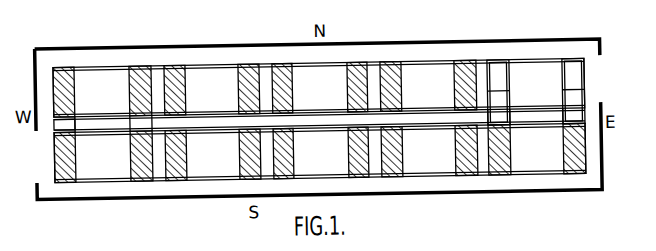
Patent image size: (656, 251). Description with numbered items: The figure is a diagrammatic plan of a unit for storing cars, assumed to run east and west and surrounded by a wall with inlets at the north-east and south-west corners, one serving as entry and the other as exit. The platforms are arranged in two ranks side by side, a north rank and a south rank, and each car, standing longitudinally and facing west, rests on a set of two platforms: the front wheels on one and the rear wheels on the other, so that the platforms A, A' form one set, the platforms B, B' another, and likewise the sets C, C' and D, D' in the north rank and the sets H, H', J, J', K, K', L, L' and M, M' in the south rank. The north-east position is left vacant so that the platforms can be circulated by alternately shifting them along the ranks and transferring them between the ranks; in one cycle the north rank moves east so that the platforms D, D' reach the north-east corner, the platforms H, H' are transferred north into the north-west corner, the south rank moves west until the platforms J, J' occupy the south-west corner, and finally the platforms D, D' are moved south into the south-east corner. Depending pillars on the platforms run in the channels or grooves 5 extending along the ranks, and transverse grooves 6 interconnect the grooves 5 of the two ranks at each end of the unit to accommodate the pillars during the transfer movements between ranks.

The channels or grooves 5 is at (122, 63).
The transverse grooves 6 is at (55, 123).
The platform A is at (72, 92).
The platform A' is at (131, 91).
The platform B is at (184, 90).
The platform B' is at (239, 89).
The platform C is at (291, 88).
The platform C' is at (347, 87).
The platform D is at (399, 86).
The platform D' is at (454, 85).
The platform H is at (74, 157).
The platform H' is at (132, 156).
The platform J is at (181, 155).
The platform J' is at (239, 154).
The platform K is at (292, 153).
The platform K' is at (348, 152).
The platform L is at (399, 151).
The platform L' is at (455, 150).
The platform M is at (510, 149).
The platform M' is at (564, 148).